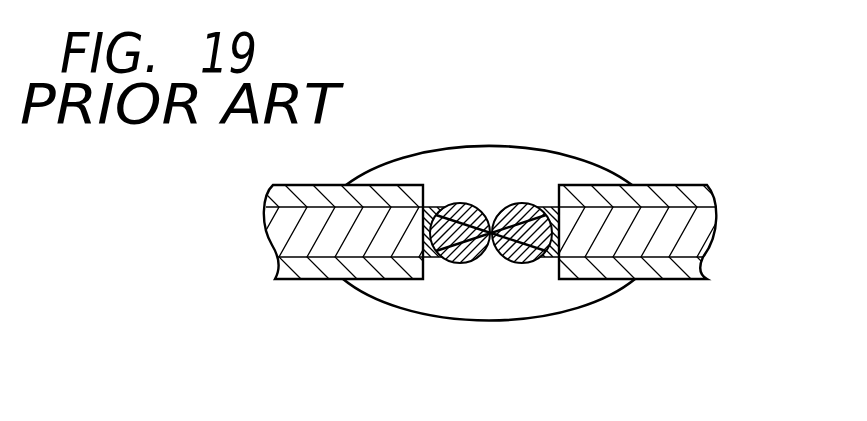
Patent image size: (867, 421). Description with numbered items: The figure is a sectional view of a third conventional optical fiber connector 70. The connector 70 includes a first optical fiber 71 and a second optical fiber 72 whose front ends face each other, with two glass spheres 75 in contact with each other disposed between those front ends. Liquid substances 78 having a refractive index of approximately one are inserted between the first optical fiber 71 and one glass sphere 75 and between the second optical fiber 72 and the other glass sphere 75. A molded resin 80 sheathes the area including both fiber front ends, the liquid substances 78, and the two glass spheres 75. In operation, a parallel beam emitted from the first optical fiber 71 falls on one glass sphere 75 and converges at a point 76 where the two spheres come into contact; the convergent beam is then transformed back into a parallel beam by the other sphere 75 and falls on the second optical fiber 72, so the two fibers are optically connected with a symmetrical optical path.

The optical fiber connector 70 is at (561, 115).
The first optical fiber 71 is at (258, 265).
The second optical fiber 72 is at (673, 193).
The glass spheres 75 is at (467, 205).
The point 76 is at (490, 258).
The liquid substances 78 is at (433, 258).
The molded resin 80 is at (548, 290).